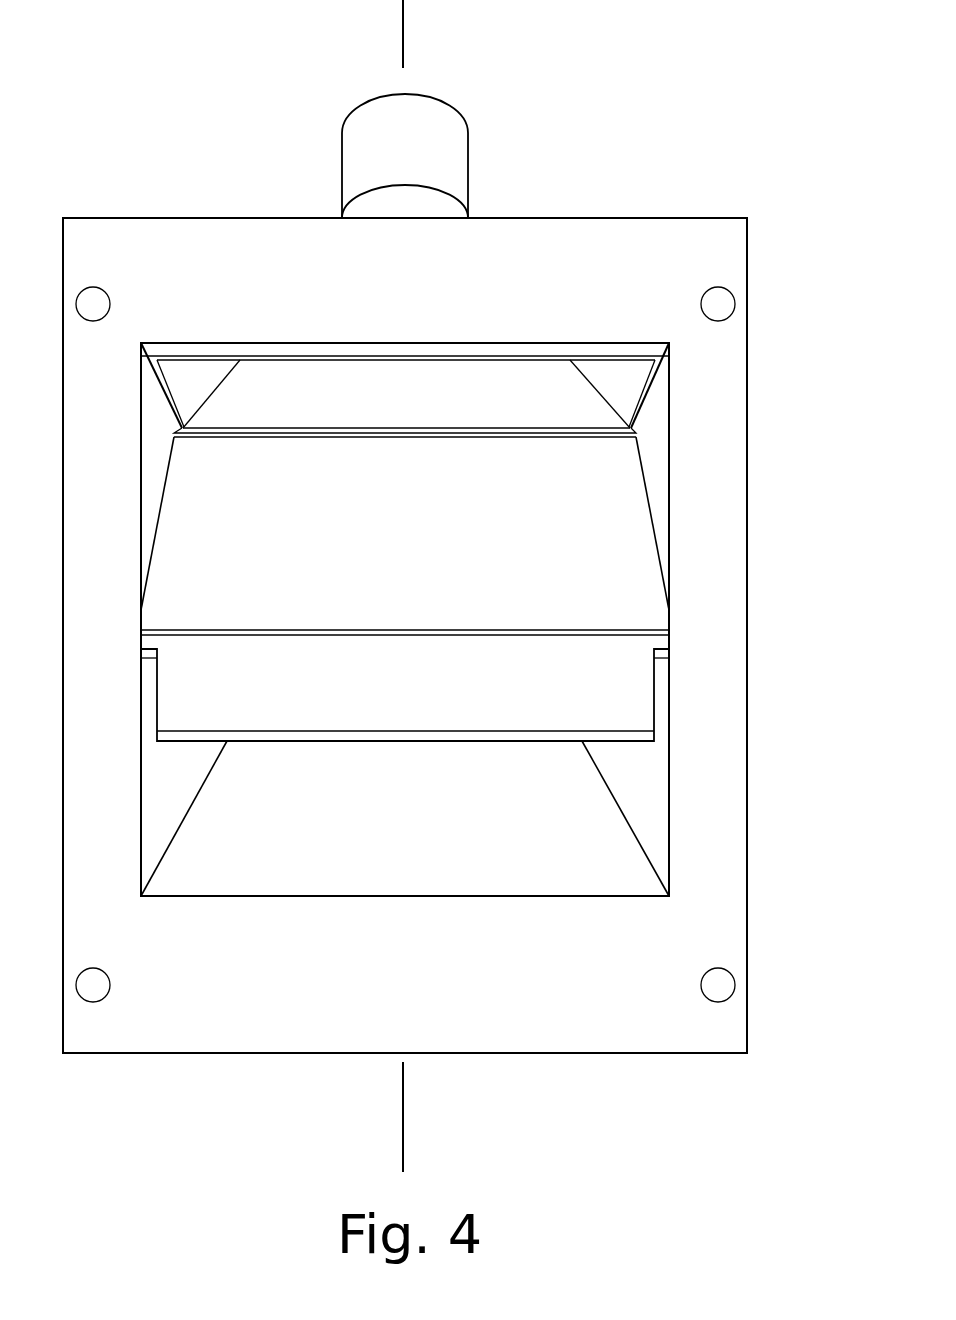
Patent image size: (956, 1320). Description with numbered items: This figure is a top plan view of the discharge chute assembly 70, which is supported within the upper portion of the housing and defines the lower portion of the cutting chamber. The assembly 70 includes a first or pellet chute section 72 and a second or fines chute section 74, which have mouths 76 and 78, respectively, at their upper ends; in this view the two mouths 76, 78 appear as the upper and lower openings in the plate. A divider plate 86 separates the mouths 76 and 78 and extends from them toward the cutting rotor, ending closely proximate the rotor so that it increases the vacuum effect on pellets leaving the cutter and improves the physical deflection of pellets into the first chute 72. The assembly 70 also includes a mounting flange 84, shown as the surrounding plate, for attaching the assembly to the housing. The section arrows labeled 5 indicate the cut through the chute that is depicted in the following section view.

The section line of FIG. 5 is at (412, 18).
The discharge chute assembly 70 is at (714, 165).
The pellet chute section 72 is at (405, 818).
The fines chute section 74 is at (396, 407).
The mouth of pellet chute section 76 is at (657, 798).
The mouth of fines chute section 78 is at (657, 455).
The mounting flange 84 is at (219, 1012).
The divider plate 86 is at (623, 698).